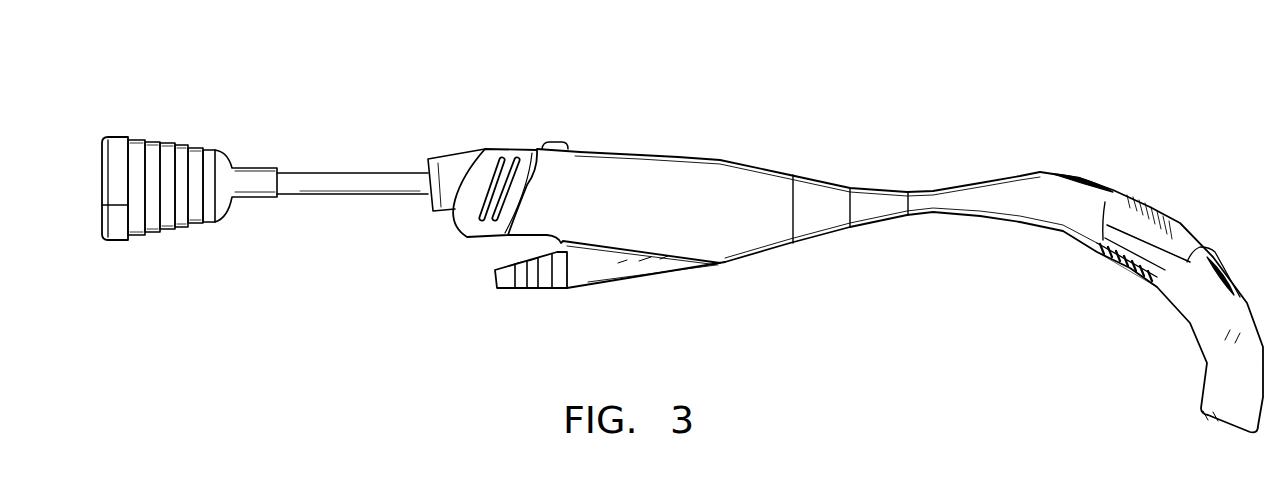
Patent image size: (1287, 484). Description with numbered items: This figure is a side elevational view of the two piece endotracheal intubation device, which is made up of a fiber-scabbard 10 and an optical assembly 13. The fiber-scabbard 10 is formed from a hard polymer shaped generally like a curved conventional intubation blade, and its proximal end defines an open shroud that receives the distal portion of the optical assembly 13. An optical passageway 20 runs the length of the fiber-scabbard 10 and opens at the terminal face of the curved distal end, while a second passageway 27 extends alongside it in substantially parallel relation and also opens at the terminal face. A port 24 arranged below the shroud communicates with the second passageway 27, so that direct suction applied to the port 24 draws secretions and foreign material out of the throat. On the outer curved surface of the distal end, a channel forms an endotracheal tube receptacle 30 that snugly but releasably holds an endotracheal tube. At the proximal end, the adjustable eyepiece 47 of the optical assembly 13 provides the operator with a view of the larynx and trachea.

The fiber-scabbard 10 is at (678, 158).
The optical assembly 13 is at (510, 146).
The optical passageway 20 is at (1137, 257).
The port 24 is at (518, 288).
The second passageway 27 is at (1157, 253).
The endotracheal tube receptacle 30 is at (1143, 217).
The adjustable eyepiece 47 is at (133, 138).